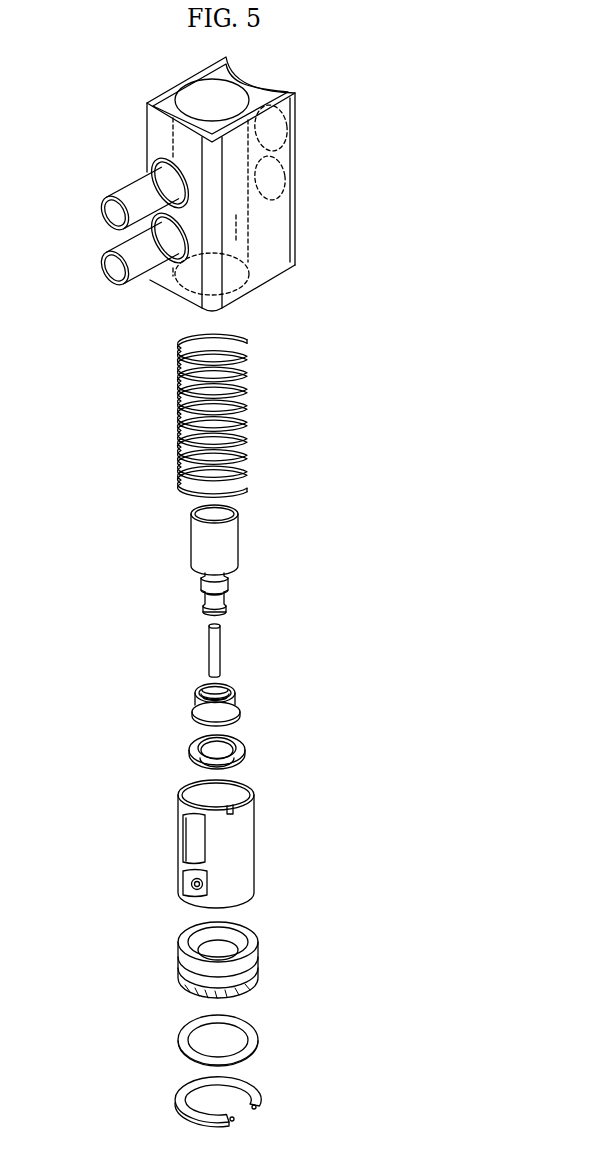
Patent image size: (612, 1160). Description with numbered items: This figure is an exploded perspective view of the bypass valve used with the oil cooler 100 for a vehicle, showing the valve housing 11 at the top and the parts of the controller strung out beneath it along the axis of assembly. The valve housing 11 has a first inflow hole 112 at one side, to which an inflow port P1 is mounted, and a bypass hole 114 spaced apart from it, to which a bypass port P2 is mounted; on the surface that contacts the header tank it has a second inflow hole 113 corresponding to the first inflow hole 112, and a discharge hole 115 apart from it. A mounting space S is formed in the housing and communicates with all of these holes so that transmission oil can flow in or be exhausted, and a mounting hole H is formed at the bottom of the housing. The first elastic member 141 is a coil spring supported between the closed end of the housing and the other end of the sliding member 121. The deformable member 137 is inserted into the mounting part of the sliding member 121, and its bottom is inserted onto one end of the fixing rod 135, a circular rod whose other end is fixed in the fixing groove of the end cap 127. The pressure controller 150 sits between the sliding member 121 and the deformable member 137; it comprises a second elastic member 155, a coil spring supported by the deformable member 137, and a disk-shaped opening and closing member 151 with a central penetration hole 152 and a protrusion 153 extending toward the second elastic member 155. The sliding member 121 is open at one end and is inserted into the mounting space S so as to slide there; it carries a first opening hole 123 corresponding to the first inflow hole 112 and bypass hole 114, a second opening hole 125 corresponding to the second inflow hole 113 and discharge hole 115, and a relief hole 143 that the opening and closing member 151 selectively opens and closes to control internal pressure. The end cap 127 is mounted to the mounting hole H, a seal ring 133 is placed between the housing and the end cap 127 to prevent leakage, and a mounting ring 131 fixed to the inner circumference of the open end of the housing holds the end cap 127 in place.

The oil cooler 100 is at (389, 275).
The valve body 11 is at (245, 79).
The first inflow hole 112 is at (158, 183).
The second inflow hole 113 is at (290, 124).
The bypass hole 114 is at (172, 258).
The discharge hole 115 is at (290, 186).
The inflow port P1 is at (102, 213).
The bypass port P2 is at (102, 268).
The mounting space S is at (237, 231).
The mounting hole H is at (244, 280).
The first elastic member 141 is at (249, 393).
The deformable member 137 is at (254, 534).
The fixing rod 135 is at (223, 645).
The pressure controller 150 is at (110, 708).
The second elastic member 155 is at (193, 713).
The opening and closing member 151 is at (189, 750).
The penetration hole 152 is at (240, 738).
The protrusion 153 is at (237, 754).
The sliding member 121 is at (251, 869).
The first opening hole 123 is at (183, 836).
The second opening hole 125 is at (241, 817).
The relief hole 143 is at (186, 896).
The end cap 127 is at (255, 963).
The seal ring 133 is at (181, 1040).
The mounting ring 131 is at (265, 1091).